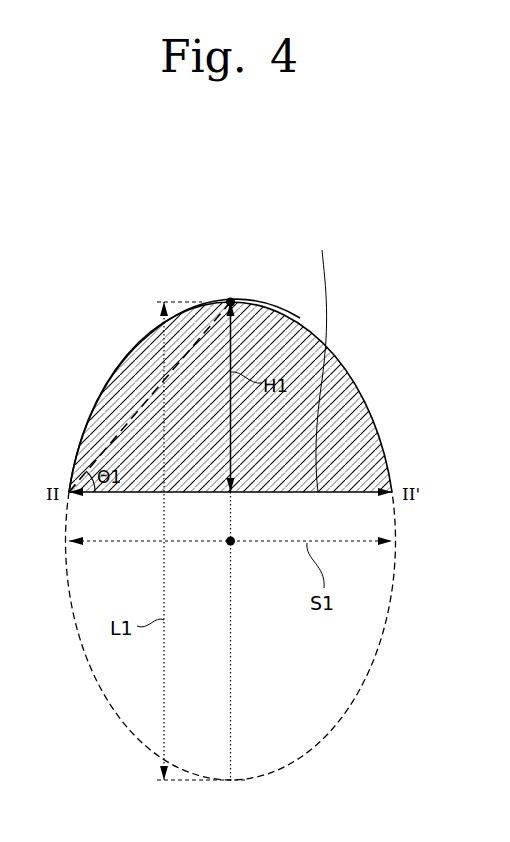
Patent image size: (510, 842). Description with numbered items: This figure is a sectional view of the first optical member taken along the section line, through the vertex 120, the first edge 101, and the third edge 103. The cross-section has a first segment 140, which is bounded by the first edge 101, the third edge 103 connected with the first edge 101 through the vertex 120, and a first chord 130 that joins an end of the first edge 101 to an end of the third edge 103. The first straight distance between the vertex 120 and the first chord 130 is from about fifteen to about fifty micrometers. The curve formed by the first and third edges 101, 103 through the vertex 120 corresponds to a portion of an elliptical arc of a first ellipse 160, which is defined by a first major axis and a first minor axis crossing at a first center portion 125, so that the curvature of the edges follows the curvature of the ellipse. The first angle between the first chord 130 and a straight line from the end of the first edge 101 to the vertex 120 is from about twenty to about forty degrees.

The first edge 101 is at (140, 341).
The third edge 103 is at (254, 303).
The vertex 120 is at (228, 300).
The first center portion 125 is at (232, 544).
The first chord 130 is at (321, 360).
The first segment 140 is at (338, 224).
The first ellipse 160 is at (370, 322).